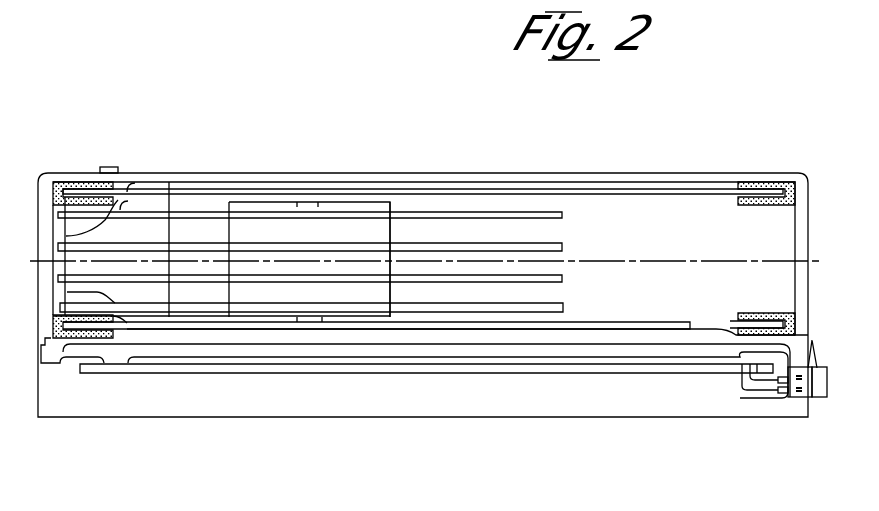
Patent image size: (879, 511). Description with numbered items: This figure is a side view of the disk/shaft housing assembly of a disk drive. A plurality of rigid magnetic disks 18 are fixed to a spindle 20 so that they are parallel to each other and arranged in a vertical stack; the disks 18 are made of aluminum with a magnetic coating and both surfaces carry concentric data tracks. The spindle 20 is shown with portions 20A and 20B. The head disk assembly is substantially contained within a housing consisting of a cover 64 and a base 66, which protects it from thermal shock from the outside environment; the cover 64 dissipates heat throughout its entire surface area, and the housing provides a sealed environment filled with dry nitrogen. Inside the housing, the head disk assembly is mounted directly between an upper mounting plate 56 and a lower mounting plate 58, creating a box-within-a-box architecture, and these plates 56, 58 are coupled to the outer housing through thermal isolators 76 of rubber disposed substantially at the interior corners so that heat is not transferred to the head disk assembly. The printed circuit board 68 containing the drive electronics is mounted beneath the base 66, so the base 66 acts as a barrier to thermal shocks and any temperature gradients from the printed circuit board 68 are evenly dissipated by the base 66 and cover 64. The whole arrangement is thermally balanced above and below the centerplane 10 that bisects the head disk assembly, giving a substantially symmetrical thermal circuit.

The centerplane 10 is at (822, 261).
The magnetic disks 18 is at (563, 246).
The spindle 20 is at (400, 206).
The spacer first portion 20A is at (233, 232).
The spacer second portion 20B is at (380, 297).
The upper mounting plate 56 is at (670, 193).
The lower mounting plate 58 is at (677, 320).
The cover 64 is at (622, 175).
The base 66 is at (725, 368).
The printed circuit board 68 is at (676, 373).
The thermal isolators 76 is at (88, 186).